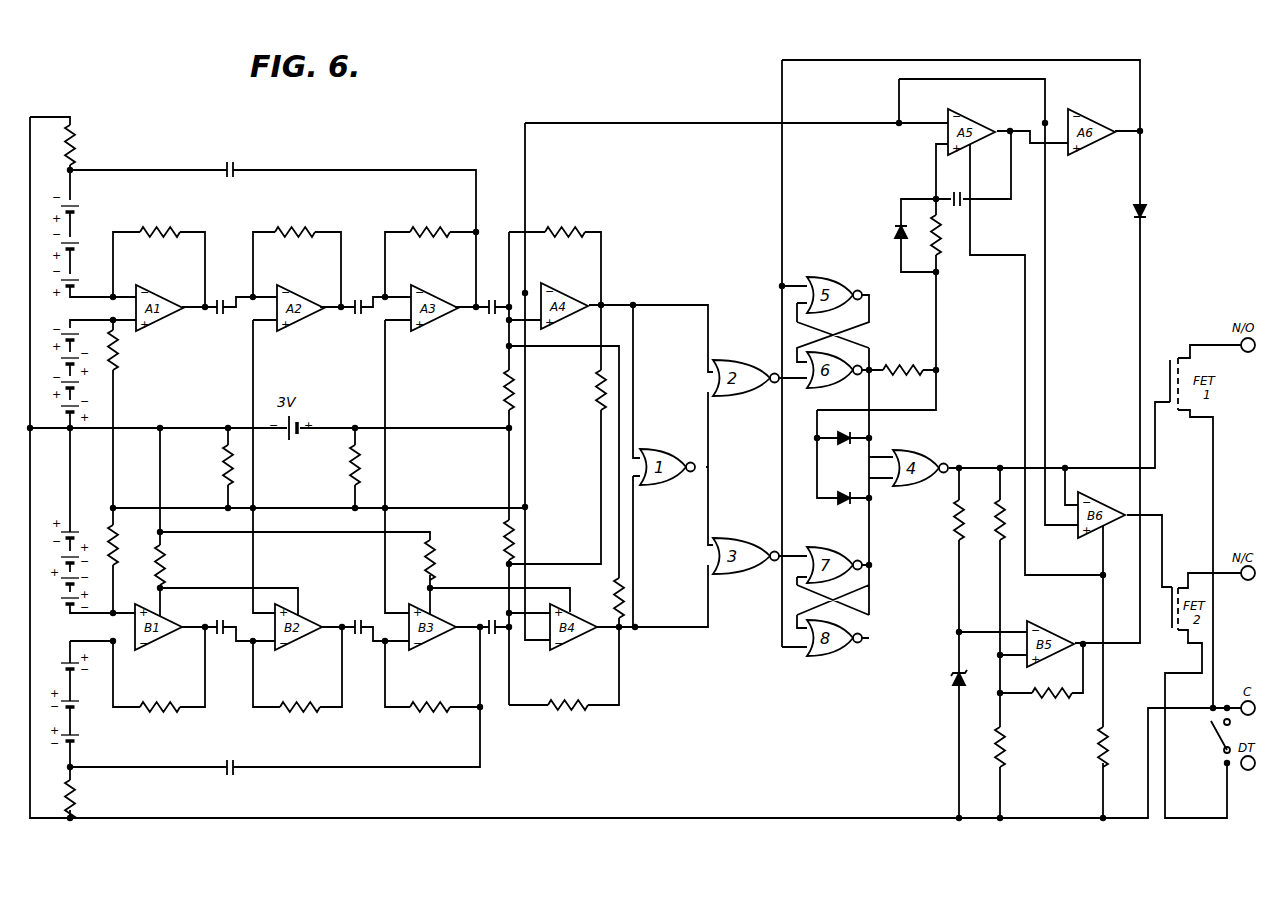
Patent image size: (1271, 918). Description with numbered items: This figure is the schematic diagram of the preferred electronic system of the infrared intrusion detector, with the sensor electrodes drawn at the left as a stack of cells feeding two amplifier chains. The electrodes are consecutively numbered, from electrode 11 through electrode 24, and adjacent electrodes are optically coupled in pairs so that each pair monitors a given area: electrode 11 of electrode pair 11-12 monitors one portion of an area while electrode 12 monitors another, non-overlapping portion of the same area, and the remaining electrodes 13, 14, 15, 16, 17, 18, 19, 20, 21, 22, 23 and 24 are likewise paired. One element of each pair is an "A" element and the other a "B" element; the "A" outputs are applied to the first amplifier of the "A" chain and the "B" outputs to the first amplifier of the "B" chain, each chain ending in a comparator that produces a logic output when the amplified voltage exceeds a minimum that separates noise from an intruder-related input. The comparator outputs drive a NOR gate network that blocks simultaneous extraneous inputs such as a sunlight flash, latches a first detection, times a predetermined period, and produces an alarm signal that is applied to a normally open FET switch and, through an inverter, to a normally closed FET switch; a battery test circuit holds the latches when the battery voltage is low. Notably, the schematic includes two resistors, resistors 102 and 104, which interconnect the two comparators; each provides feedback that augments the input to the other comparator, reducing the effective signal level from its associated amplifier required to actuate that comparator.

The electrode 11 is at (69, 413).
The electrode 12 is at (69, 598).
The electrode 13 is at (75, 382).
The electrode 14 is at (77, 578).
The electrode 15 is at (76, 243).
The electrode 16 is at (76, 700).
The electrode 17 is at (70, 366).
The electrode 18 is at (69, 557).
The electrode 19 is at (71, 334).
The electrode 20 is at (76, 532).
The electrode 21 is at (76, 280).
The electrode 22 is at (72, 663).
The electrode 23 is at (77, 206).
The electrode 24 is at (77, 735).
The resistor 102 is at (601, 385).
The resistor 104 is at (618, 590).